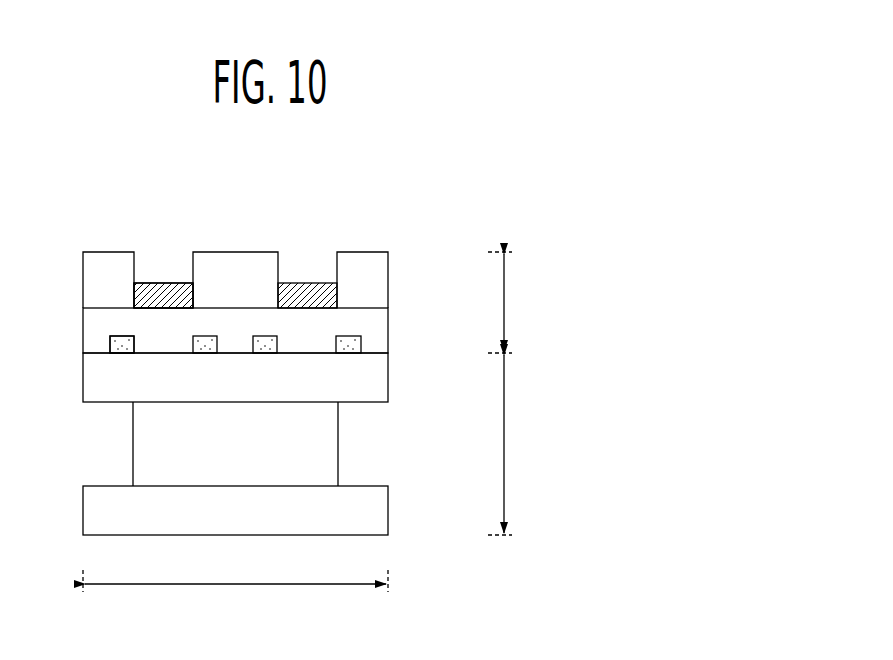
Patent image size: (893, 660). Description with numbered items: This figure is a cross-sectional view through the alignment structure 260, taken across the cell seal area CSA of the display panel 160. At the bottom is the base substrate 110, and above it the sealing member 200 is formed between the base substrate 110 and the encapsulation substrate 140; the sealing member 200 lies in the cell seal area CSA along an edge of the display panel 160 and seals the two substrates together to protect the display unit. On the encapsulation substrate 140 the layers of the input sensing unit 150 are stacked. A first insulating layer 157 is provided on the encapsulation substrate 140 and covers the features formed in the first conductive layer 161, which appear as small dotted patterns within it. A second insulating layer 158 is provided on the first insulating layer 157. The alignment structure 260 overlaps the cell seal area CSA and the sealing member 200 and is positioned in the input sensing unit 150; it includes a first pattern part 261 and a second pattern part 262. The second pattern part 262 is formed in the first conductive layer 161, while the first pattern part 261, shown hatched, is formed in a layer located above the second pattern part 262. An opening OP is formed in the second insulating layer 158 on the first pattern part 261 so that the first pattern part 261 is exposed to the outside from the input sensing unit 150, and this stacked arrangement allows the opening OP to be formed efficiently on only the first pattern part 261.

The base substrate 110 is at (388, 505).
The sealing member 200 is at (338, 444).
The encapsulation substrate 140 is at (388, 383).
The first insulating layer 157 is at (388, 320).
The second insulating layer 158 is at (388, 276).
The first conductive layer 161 is at (361, 345).
The alignment structure 260 is at (91, 200).
The first pattern part 261 is at (175, 290).
The second pattern part 262 is at (123, 340).
The opening OP is at (310, 262).
The input sensing unit 150 is at (515, 302).
The display panel 160 is at (515, 445).
The cell seal area CSA is at (236, 579).